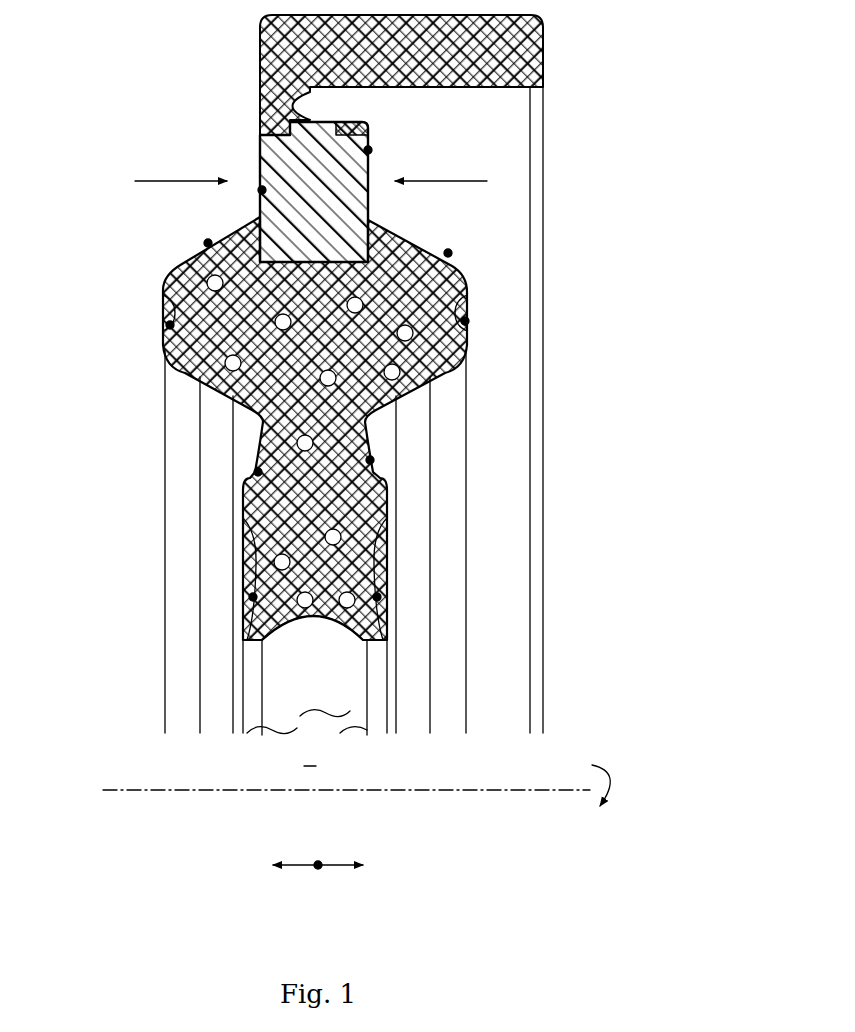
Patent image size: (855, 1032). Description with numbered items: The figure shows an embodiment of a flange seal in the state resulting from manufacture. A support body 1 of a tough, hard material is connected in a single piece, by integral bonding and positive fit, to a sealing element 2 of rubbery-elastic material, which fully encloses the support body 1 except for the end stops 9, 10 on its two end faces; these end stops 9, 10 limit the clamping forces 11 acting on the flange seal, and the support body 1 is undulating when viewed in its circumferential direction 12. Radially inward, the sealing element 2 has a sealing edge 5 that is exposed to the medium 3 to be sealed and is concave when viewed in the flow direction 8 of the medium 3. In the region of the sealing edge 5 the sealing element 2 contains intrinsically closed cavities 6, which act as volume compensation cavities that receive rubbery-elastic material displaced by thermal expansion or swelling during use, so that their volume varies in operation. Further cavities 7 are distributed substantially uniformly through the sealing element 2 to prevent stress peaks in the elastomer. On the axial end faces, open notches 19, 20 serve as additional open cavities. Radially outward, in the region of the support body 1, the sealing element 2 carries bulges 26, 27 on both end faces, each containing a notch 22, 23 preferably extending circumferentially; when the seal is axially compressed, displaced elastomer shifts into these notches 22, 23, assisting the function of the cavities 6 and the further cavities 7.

The support body 1 is at (345, 181).
The sealing element 2 is at (343, 537).
The medium 3 is at (397, 727).
The sealing edge 5 is at (278, 683).
The cavities 6 is at (354, 604).
The further cavities 7 is at (383, 520).
The flow direction 8 is at (318, 866).
The end stop 9 is at (261, 190).
The end stop 10 is at (369, 150).
The clamping forces 11 is at (170, 181).
The circumferential direction 12 is at (613, 773).
The notch 19 is at (257, 471).
The notch 20 is at (371, 460).
The notch 22 is at (169, 325).
The notch 23 is at (466, 321).
The bulge 26 is at (207, 243).
The bulge 27 is at (449, 253).